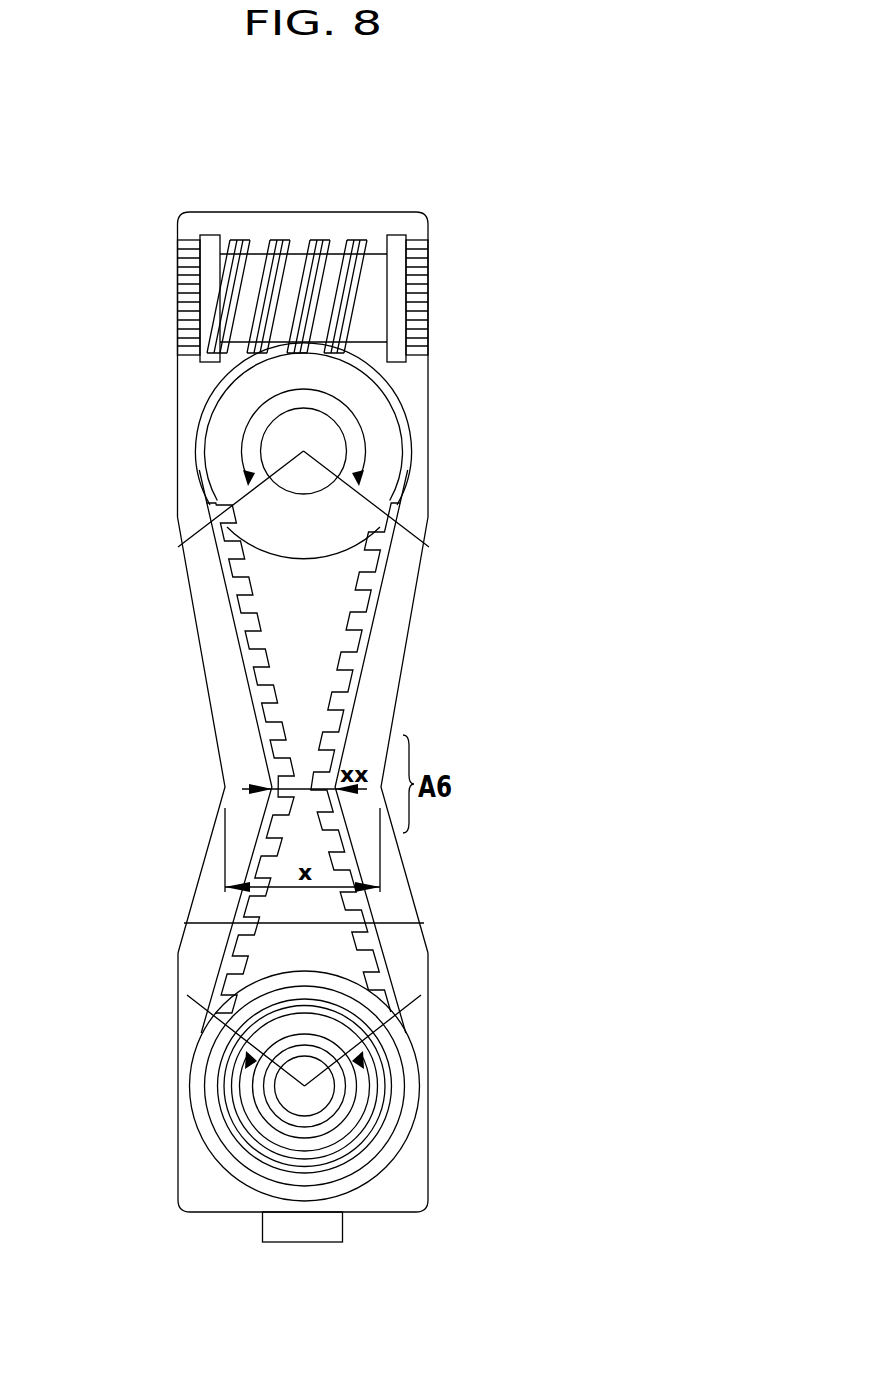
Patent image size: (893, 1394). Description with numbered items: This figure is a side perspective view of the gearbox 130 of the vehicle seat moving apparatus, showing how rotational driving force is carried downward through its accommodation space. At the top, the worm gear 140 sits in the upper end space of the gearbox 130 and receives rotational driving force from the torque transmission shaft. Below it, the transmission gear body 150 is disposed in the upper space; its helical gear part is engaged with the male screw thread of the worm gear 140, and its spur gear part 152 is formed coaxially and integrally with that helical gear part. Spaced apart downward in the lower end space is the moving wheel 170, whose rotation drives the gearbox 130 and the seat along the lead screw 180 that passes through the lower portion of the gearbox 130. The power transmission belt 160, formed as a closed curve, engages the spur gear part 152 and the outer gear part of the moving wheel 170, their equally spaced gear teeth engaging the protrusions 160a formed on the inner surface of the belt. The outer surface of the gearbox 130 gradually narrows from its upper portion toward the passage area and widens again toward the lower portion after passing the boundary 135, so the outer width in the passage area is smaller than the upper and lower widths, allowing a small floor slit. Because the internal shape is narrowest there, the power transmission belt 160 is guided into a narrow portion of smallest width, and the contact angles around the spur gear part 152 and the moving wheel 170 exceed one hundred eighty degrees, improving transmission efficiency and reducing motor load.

The gearbox 130 is at (388, 195).
The boundary 135 is at (225, 789).
The worm gear 140 is at (243, 255).
The transmission gear body 150 is at (398, 420).
The spur gear part 152 is at (322, 562).
The power transmission belt 160 is at (355, 673).
The protrusions 160a is at (253, 622).
The moving wheel 170 is at (318, 984).
The lead screw 180 is at (295, 1052).